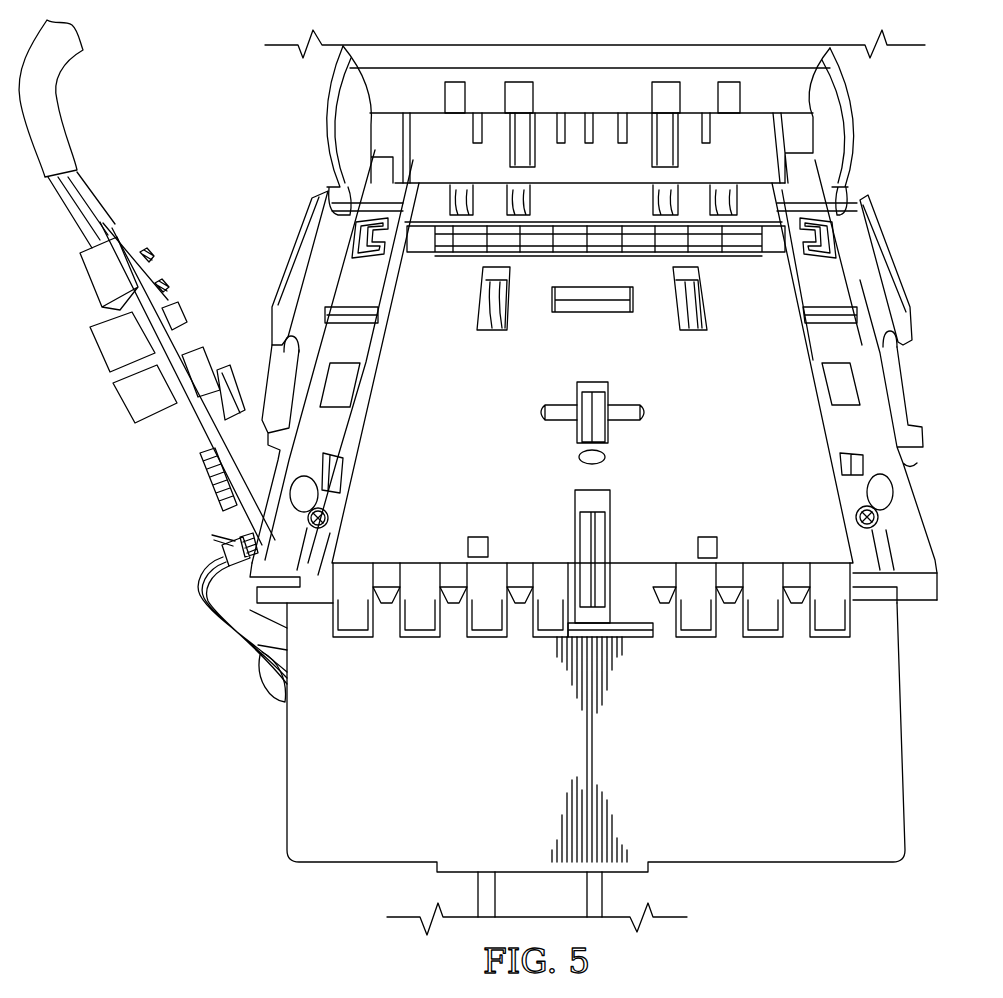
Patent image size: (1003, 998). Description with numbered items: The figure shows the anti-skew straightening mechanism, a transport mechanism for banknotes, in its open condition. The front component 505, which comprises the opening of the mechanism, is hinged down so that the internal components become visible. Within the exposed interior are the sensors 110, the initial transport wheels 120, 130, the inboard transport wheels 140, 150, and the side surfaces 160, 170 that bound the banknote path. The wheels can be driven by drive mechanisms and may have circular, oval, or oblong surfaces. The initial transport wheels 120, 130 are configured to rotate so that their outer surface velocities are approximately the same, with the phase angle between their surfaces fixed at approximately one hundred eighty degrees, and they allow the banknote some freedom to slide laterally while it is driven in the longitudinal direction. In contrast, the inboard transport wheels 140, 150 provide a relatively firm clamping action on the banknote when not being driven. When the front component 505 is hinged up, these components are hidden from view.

The sensors 110 is at (709, 543).
The initial transport wheel 120 is at (598, 530).
The initial transport wheel 130 is at (597, 400).
The inboard transport wheel 140 is at (490, 333).
The inboard transport wheel 150 is at (690, 333).
The side surface 160 is at (363, 466).
The side surface 170 is at (828, 466).
The front component 505 is at (285, 766).